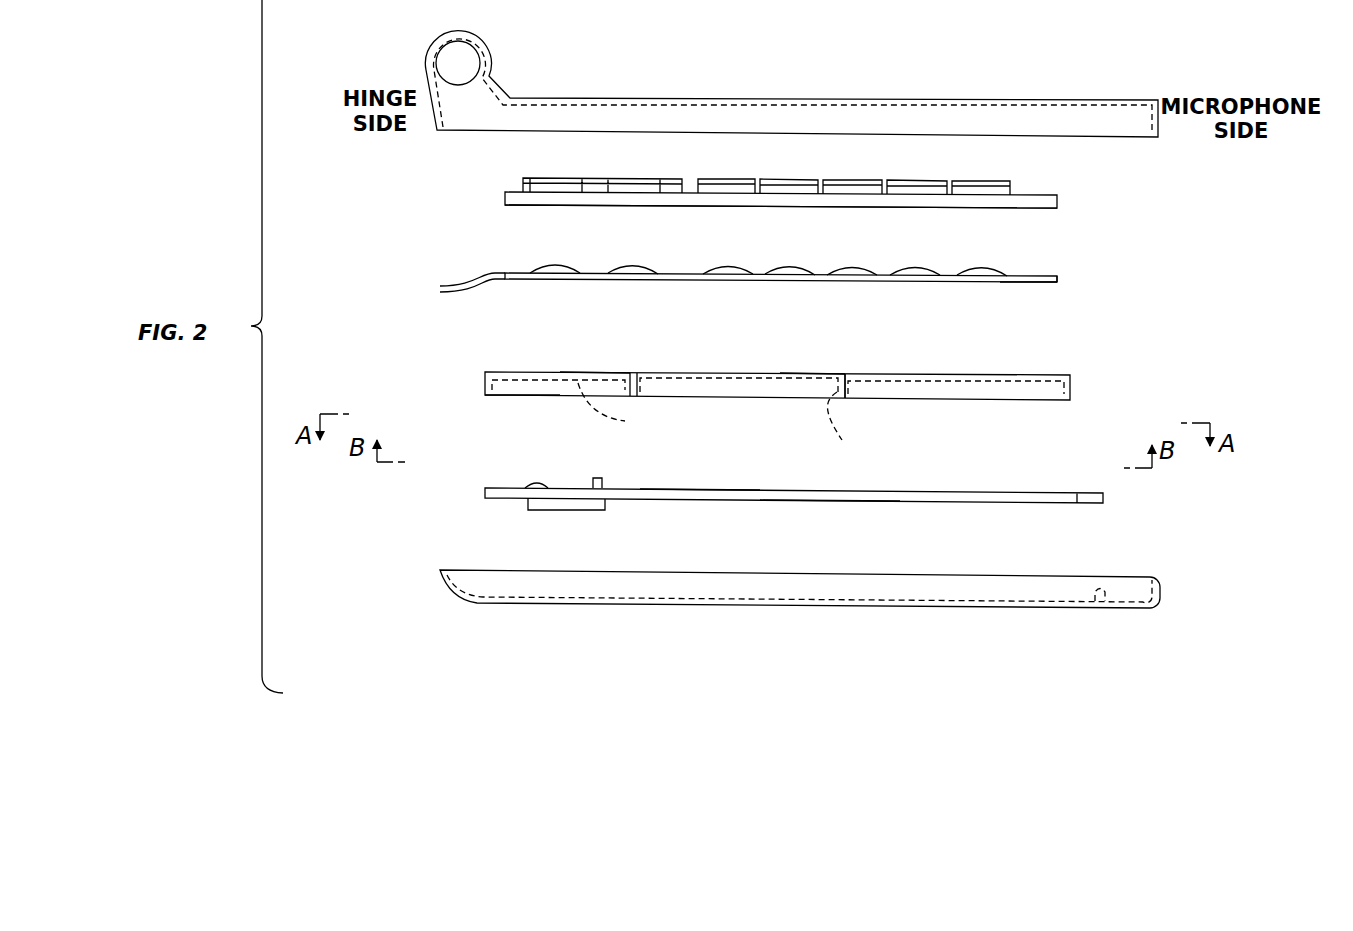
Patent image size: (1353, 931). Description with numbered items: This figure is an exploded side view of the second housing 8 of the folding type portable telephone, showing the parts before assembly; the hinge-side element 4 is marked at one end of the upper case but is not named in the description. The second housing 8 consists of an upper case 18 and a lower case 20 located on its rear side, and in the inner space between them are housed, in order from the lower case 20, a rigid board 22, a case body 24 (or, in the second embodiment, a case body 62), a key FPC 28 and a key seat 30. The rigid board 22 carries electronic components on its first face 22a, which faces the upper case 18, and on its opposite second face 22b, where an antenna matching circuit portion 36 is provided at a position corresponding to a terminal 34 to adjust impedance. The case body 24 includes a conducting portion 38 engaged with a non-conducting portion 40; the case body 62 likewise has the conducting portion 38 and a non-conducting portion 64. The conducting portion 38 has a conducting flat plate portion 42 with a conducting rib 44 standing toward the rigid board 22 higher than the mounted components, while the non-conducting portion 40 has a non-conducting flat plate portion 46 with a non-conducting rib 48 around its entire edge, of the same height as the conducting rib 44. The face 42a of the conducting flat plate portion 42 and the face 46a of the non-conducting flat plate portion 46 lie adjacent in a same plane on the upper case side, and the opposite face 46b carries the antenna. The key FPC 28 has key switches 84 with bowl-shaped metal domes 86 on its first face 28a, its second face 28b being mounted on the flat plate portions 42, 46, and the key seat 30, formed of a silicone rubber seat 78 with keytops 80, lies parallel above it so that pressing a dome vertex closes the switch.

The hinge 4 is at (428, 58).
The second housing 8 is at (759, 341).
The upper case 18 is at (758, 80).
The lower case 20 is at (785, 606).
The rigid board 22 is at (774, 485).
The first face 22a is at (685, 490).
The second face 22b is at (835, 503).
The case body 24 is at (811, 382).
The key FPC 28 is at (761, 276).
The first face 28a is at (1030, 275).
The second face 28b is at (1013, 283).
The key seat 30 is at (747, 198).
The terminal 34 is at (598, 478).
The antenna matching circuit portion 36 is at (528, 502).
The conducting portion 38 is at (1002, 372).
The non-conducting portion 40 is at (542, 376).
The conducting flat plate portion 42 is at (779, 382).
The face 42a is at (812, 372).
The conducting rib 44 is at (871, 419).
The non-conducting flat plate portion 46 is at (530, 372).
The face 46a is at (600, 372).
The face 46b is at (620, 409).
The non-conducting rib 48 is at (532, 393).
The case body 62 is at (811, 382).
The non-conducting portion 64 is at (542, 376).
The seat 78 is at (745, 208).
The keytops 80 is at (855, 180).
The key switches 84 is at (975, 268).
The metal domes 86 is at (769, 252).